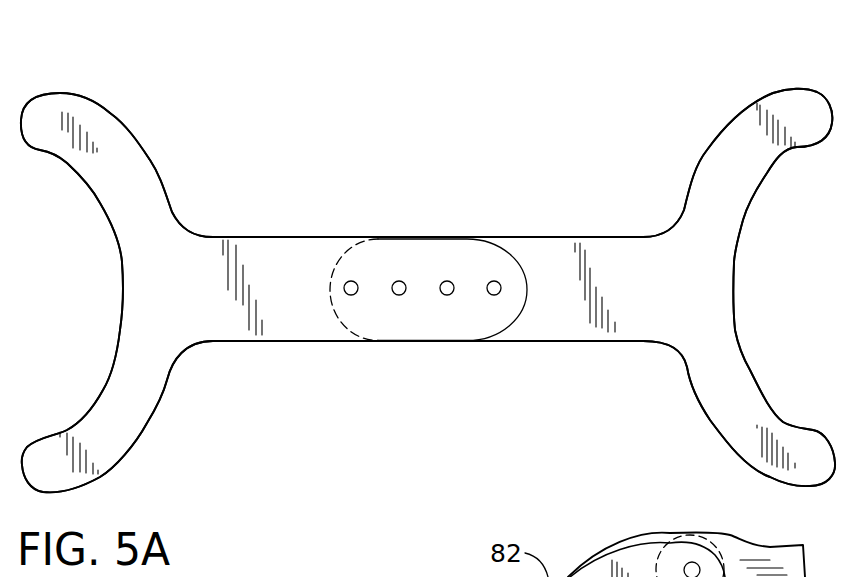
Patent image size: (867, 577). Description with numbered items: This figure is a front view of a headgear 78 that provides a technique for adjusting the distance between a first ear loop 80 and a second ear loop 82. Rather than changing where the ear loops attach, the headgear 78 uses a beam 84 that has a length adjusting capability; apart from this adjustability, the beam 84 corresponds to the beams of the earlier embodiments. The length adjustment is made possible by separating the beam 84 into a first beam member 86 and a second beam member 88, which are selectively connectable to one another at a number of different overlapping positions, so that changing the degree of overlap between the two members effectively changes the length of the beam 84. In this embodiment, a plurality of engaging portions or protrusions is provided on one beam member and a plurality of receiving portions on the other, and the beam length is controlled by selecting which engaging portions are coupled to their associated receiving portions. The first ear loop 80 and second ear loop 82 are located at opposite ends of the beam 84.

The headgear 78 is at (680, 77).
The first ear loop 80 is at (722, 303).
The second ear loop 82 is at (140, 308).
The beam 84 is at (458, 365).
The first beam member 86 is at (553, 242).
The second beam member 88 is at (398, 252).